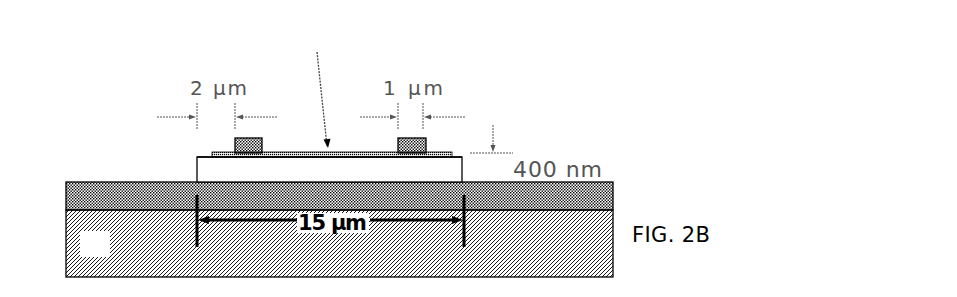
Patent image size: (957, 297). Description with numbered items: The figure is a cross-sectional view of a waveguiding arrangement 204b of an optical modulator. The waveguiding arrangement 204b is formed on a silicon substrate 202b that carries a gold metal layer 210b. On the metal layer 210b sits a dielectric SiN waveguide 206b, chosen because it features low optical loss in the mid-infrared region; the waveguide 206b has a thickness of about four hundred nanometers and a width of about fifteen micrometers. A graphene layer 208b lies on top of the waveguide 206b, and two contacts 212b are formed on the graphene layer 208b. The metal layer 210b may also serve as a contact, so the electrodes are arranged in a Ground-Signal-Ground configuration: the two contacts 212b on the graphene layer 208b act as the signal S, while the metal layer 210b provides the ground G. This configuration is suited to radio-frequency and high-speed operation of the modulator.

The substrate 202b is at (340, 243).
The metal layer 210b is at (339, 199).
The waveguide 206b is at (297, 167).
The waveguiding arrangement 204b is at (186, 152).
The graphene layer 208b is at (317, 150).
The contacts 212b is at (235, 145).
The signal S is at (268, 144).
The ground G is at (74, 169).